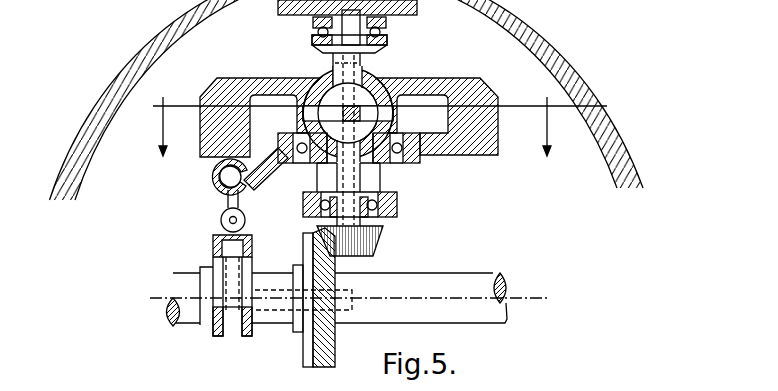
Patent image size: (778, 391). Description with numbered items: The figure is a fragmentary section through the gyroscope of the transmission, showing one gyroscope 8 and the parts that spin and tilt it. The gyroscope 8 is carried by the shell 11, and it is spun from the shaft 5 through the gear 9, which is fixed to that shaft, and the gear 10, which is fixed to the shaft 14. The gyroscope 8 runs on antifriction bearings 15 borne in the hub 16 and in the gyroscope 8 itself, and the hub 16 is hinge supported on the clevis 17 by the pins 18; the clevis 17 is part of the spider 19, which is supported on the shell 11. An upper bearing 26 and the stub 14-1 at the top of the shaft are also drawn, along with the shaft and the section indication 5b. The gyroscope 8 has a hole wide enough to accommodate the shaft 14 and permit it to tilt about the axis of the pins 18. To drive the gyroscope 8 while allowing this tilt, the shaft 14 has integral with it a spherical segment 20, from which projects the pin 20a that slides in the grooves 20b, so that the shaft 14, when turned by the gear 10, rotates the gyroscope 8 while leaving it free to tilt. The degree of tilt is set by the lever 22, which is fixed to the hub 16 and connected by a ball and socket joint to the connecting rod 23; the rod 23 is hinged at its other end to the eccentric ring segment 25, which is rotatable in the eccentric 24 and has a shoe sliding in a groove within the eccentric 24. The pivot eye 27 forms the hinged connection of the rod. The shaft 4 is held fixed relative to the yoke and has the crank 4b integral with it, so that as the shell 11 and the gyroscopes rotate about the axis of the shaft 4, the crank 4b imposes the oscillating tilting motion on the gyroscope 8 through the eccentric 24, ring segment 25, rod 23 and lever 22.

The shaft 4 is at (188, 318).
The crank 4b is at (212, 268).
The shaft 5 is at (267, 284).
The section line 5b is at (379, 138).
The gyroscope 8 is at (498, 140).
The gear 9 is at (326, 349).
The gear 10 is at (376, 244).
The shell 11 is at (592, 113).
The shaft 14 is at (336, 178).
The upper shaft stub 14-1 is at (360, 70).
The antifriction bearings 15 is at (407, 162).
The hub 16 is at (418, 150).
The clevis 17 is at (381, 178).
The pins 18 is at (393, 115).
The spider 19 is at (397, 204).
The spherical segment 20 is at (362, 96).
The pin 20a is at (312, 113).
The grooves 20b is at (322, 85).
The lever 22 is at (256, 182).
The connecting rod 23 is at (217, 190).
The eccentric 24 is at (254, 333).
The eccentric ring segment 25 is at (213, 232).
The upper bearing 26 is at (388, 32).
The pivot eye 27 is at (246, 222).